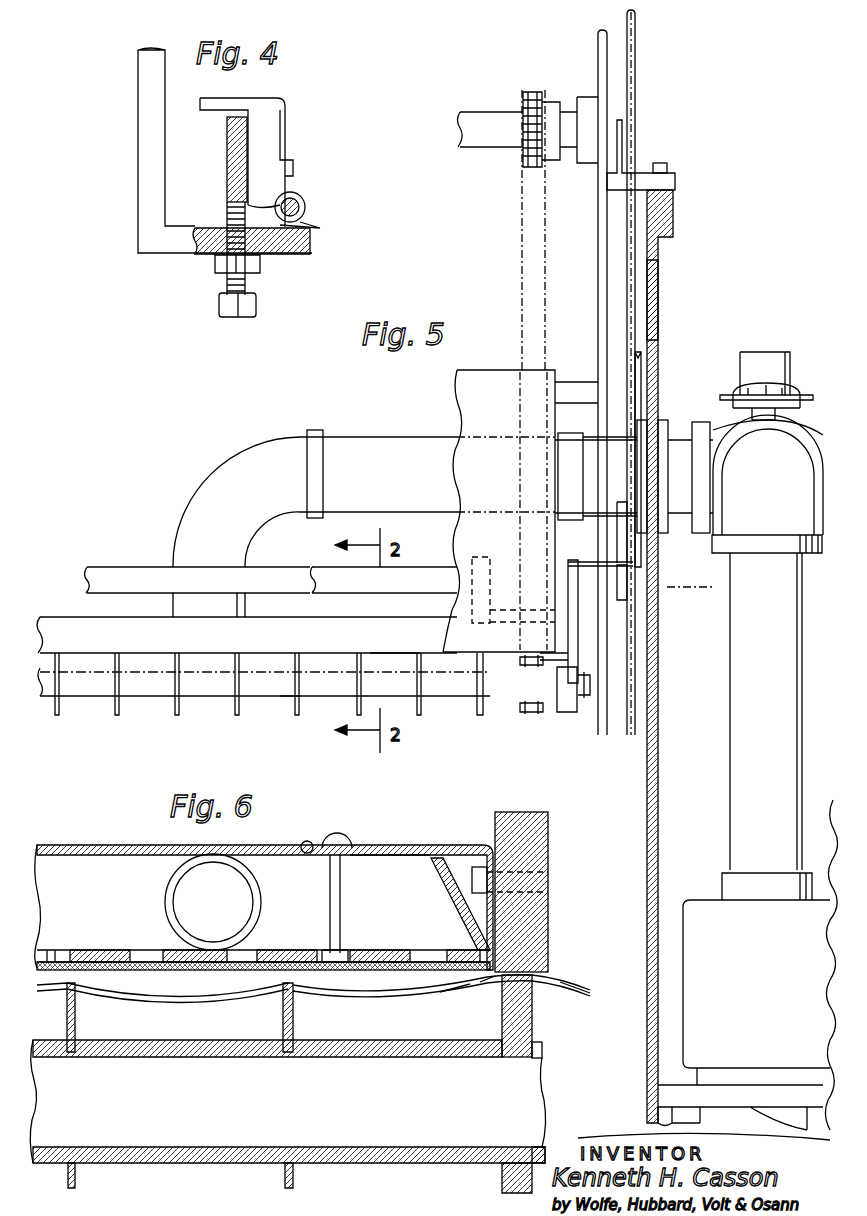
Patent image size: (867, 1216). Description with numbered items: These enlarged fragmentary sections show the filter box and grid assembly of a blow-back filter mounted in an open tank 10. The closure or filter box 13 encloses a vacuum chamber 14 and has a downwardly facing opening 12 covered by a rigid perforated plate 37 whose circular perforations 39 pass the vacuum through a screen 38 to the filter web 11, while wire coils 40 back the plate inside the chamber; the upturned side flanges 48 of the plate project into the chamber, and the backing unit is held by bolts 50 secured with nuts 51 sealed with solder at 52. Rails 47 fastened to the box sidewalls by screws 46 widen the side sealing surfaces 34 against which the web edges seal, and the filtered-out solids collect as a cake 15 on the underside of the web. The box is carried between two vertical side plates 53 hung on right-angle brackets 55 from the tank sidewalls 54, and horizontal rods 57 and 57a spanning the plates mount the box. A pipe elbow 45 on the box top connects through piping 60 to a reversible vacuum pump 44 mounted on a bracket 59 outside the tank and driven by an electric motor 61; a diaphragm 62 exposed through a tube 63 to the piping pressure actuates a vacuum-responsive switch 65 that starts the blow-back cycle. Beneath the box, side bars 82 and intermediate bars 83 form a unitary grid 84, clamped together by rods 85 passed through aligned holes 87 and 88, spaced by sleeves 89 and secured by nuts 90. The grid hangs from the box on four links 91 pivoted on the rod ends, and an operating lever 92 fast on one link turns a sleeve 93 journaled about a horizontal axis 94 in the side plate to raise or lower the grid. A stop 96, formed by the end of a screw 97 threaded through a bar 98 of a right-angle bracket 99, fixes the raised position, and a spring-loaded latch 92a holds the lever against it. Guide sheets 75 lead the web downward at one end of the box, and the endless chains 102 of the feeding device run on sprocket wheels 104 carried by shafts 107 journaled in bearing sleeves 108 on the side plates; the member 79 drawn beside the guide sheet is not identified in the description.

In FIG. 5, the open tank 10 is at (660, 304).
In FIG. 5, the filter web 11 is at (390, 652).
In FIG. 6, the filter web 11 is at (455, 986).
In FIG. 6, the downwardly facing opening 12 is at (487, 978).
In FIG. 5, the closure 13 is at (70, 617).
In FIG. 6, the closure 13 is at (413, 846).
In FIG. 6, the chamber 14 is at (388, 868).
In FIG. 6, the cake 15 is at (380, 996).
In FIG. 6, the side sealing surfaces 34 is at (566, 980).
In FIG. 6, the perforated plate 37 is at (96, 945).
In FIG. 6, the screen 38 is at (186, 971).
In FIG. 6, the perforations 39 is at (143, 953).
In FIG. 6, the wire coils 40 is at (262, 900).
In FIG. 5, the vacuum pump 44 is at (702, 908).
In FIG. 5, the pipe elbow 45 is at (205, 477).
In FIG. 6, the screws 46 is at (478, 867).
In FIG. 5, the rails 47 is at (513, 591).
In FIG. 6, the rails 47 is at (541, 837).
In FIG. 6, the side flanges 48 is at (452, 899).
In FIG. 6, the bolts 50 is at (340, 926).
In FIG. 6, the nuts 51 is at (310, 846).
In FIG. 6, the solder seal 52 is at (337, 836).
In FIG. 5, the side plates 53 is at (598, 241).
In FIG. 5, the tank sidewalls 54 is at (658, 851).
In FIG. 5, the right-angle brackets 55 is at (622, 140).
In FIG. 5, the horizontal rods 57 is at (125, 567).
In FIG. 5, the rod 57a is at (357, 593).
In FIG. 5, the bracket 59 is at (718, 1090).
In FIG. 5, the piping 60 is at (733, 667).
In FIG. 5, the reversible electric motor 61 is at (828, 837).
In FIG. 5, the diaphragm 62 is at (790, 392).
In FIG. 5, the tube 63 is at (775, 416).
In FIG. 5, the valve actuator 65 is at (790, 358).
In FIG. 5, the guide sheets 75 is at (462, 404).
In FIG. 5, the flange 79 is at (572, 382).
In FIG. 6, the side supporting bars 82 is at (532, 1008).
In FIG. 5, the intermediate supporting bars 83 is at (235, 708).
In FIG. 6, the intermediate supporting bars 83 is at (75, 1017).
In FIG. 5, the grid 84 is at (115, 722).
In FIG. 6, the rods 85 is at (543, 1133).
In FIG. 6, the aligned holes 87 is at (536, 1059).
In FIG. 6, the aligned holes 88 is at (322, 1057).
In FIG. 5, the sleeves 89 is at (287, 690).
In FIG. 6, the sleeves 89 is at (178, 1163).
In FIG. 5, the nuts 90 is at (580, 688).
In FIG. 5, the links 91 is at (575, 651).
In FIG. 4, the operating lever 92 is at (227, 157).
In FIG. 5, the operating lever 92 is at (641, 365).
In FIG. 4, the spring-loaded latch 92a is at (286, 134).
In FIG. 5, the sleeve 93 is at (625, 602).
In FIG. 5, the horizontal axis 94 is at (690, 600).
In FIG. 4, the stop 96 is at (227, 204).
In FIG. 4, the screw 97 is at (227, 283).
In FIG. 4, the base block 98 is at (312, 246).
In FIG. 4, the right-angle bracket 99 is at (138, 134).
In FIG. 5, the endless chains 102 is at (530, 704).
In FIG. 5, the sprocket wheels 104 is at (535, 168).
In FIG. 5, the shafts 107 is at (493, 118).
In FIG. 5, the bearing sleeves 108 is at (590, 97).